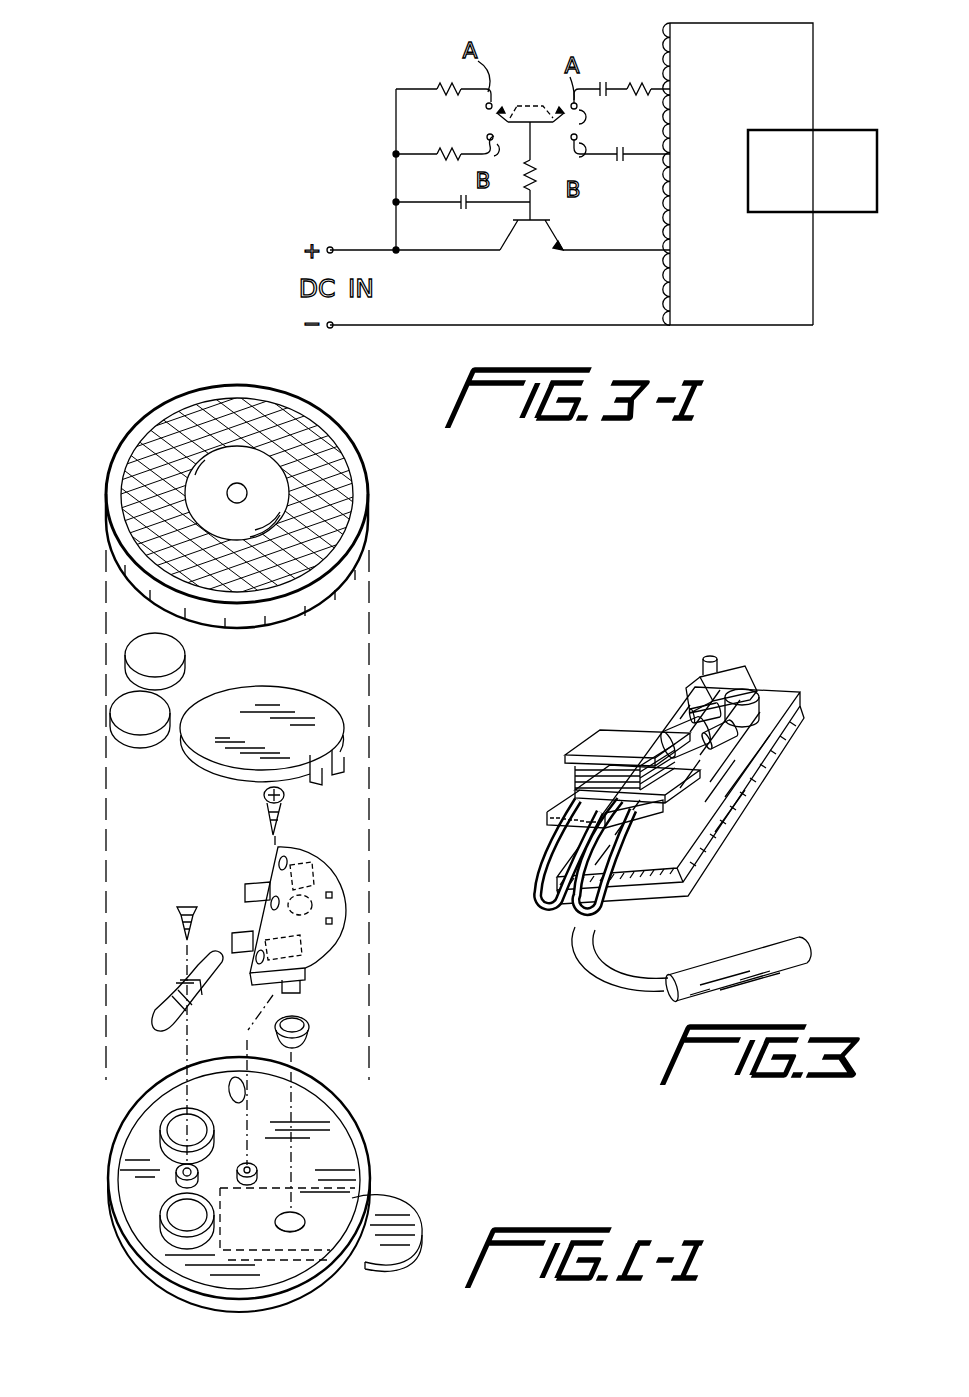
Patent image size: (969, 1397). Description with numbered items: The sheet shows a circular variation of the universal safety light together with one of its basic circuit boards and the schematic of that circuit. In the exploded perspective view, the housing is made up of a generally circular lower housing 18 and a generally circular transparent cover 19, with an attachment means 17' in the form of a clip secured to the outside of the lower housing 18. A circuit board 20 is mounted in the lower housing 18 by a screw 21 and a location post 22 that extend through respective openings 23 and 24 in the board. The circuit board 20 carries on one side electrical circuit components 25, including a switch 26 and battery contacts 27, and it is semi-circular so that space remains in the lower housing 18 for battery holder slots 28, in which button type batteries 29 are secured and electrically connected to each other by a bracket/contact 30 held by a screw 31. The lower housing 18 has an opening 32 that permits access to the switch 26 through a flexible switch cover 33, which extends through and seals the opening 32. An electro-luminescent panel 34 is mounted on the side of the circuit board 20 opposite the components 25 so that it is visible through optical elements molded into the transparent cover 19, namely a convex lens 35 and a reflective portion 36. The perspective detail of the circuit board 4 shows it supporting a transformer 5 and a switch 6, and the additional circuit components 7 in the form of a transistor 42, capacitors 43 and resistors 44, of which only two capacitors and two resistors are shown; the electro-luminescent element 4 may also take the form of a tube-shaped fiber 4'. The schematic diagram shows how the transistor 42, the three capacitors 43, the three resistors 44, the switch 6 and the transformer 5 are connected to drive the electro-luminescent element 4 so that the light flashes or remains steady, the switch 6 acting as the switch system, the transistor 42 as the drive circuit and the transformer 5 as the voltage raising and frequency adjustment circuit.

In FIG. 3-1, the electro-luminescent element 4 is at (783, 171).
In FIG. 3, the electro-luminescent element 4 is at (671, 808).
In FIG. 3, the tube-shaped fiber 4' is at (696, 949).
In FIG. 3-1, the transformer 5 is at (675, 262).
In FIG. 3, the transformer 5 is at (600, 742).
In FIG. 3-1, the switch 6 is at (534, 90).
In FIG. 3, the switch 6 is at (735, 668).
In FIG. 3, the additional components 7 is at (656, 684).
In FIG. 1-1, the attachment means 17' is at (396, 1255).
In FIG. 1-1, the lower housing 18 is at (352, 1112).
In FIG. 1-1, the transparent cover 19 is at (130, 487).
In FIG. 1-1, the circuit board 20 is at (345, 910).
In FIG. 1-1, the screw 21 is at (263, 792).
In FIG. 1-1, the location post 22 is at (243, 1097).
In FIG. 1-1, the opening 23 is at (270, 888).
In FIG. 1-1, the opening 24 is at (283, 850).
In FIG. 1-1, the electrical circuit components 25 is at (300, 920).
In FIG. 1-1, the switch 26 is at (305, 885).
In FIG. 1-1, the battery contacts 27 is at (245, 890).
In FIG. 1-1, the battery holder slots 28 is at (178, 1125).
In FIG. 1-1, the button type batteries 29 is at (135, 652).
In FIG. 1-1, the bracket/contact 30 is at (156, 1012).
In FIG. 1-1, the screw 31 is at (180, 908).
In FIG. 1-1, the opening 32 is at (303, 1214).
In FIG. 1-1, the flexible switch cover 33 is at (310, 1028).
In FIG. 1-1, the electro-luminescent panel 34 is at (330, 728).
In FIG. 1-1, the convex lens 35 is at (213, 463).
In FIG. 1-1, the reflective portion 36 is at (203, 412).
In FIG. 3-1, the transistor 42 is at (560, 234).
In FIG. 3, the transistor 42 is at (732, 728).
In FIG. 3-1, the capacitors 43 is at (602, 80).
In FIG. 3, the capacitors 43 is at (760, 689).
In FIG. 3-1, the resistors 44 is at (437, 89).
In FIG. 3, the resistors 44 is at (689, 705).